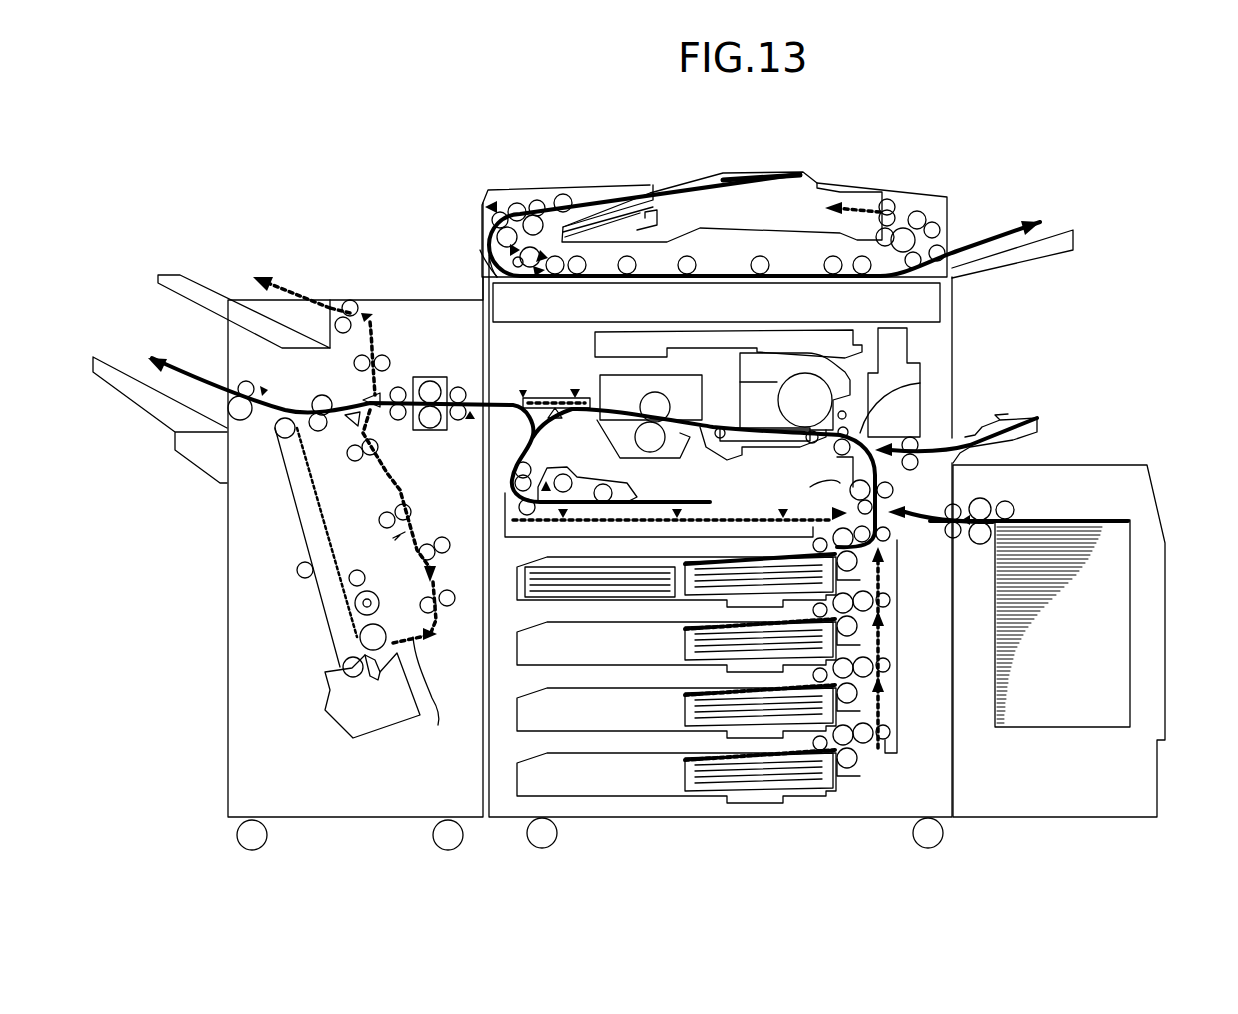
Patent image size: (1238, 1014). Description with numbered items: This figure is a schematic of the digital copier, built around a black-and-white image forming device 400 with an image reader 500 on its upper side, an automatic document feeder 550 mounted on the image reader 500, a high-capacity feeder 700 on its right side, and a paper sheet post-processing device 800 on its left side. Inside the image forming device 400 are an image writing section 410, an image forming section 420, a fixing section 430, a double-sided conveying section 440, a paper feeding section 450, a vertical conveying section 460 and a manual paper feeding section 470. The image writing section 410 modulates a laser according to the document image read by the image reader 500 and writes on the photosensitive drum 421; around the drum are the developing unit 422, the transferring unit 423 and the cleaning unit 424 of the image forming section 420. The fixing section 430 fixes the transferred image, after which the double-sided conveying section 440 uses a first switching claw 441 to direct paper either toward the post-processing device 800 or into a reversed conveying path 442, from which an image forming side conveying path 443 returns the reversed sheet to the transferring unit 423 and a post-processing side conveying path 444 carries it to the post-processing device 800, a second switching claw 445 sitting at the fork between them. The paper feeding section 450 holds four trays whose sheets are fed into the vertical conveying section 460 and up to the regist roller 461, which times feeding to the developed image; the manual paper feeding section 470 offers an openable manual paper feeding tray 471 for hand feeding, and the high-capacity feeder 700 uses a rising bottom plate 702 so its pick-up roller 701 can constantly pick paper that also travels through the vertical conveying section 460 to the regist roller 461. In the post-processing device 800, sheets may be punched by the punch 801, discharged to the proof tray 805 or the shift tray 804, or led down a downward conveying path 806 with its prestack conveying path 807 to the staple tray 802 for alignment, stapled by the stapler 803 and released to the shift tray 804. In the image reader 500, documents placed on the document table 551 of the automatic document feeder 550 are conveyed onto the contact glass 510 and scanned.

The black-and-white image forming device 400 is at (967, 325).
The image writing section 410 is at (610, 333).
The image forming section 420 is at (903, 403).
The photosensitive drum 421 is at (826, 413).
The developing unit 422 is at (938, 385).
The transferring unit 423 is at (812, 448).
The cleaning unit 424 is at (795, 391).
The fixing section 430 is at (600, 377).
The double-sided conveying section 440 is at (738, 472).
The first switching claw 441 is at (547, 393).
The reversed conveying path 442 is at (633, 487).
The image forming side conveying path 443 is at (620, 527).
The post-processing side conveying path 444 is at (485, 487).
The second switching claw 445 is at (523, 400).
The paper feeding section 450 is at (498, 815).
The vertical conveying section 460 is at (897, 710).
The regist roller 461 is at (932, 382).
The manual paper feeding section 470 is at (1000, 420).
The manual paper feeding tray 471 is at (1012, 438).
The image reader 500 is at (928, 297).
The contact glass 510 is at (480, 252).
The automatic document feeder 550 is at (865, 192).
The document table 551 is at (650, 200).
The high-capacity feeder 700 is at (1148, 475).
The pick-up roller 701 is at (1005, 510).
The bottom plate 702 is at (1083, 727).
The paper sheet post-processing device 800 is at (228, 615).
The punch 801 is at (432, 430).
The staple tray 802 is at (307, 533).
The stapler 803 is at (347, 722).
The shift tray 804 is at (133, 392).
The proof tray 805 is at (208, 283).
The downward conveying path 806 is at (438, 725).
The prestack conveying path 807 is at (410, 535).